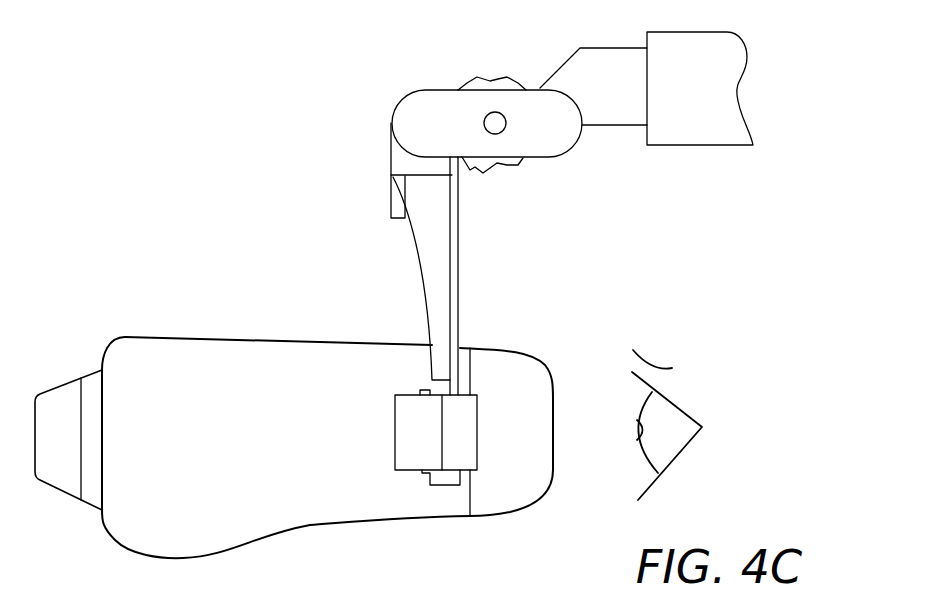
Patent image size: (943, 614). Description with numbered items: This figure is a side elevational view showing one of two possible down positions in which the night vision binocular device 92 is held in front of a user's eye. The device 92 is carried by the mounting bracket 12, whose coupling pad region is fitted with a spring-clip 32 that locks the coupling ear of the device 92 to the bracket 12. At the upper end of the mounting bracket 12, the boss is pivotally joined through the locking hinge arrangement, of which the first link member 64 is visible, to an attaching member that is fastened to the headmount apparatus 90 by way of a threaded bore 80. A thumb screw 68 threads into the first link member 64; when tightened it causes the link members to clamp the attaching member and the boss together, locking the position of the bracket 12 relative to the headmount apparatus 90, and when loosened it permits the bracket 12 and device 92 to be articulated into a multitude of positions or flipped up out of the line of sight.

The mounting bracket 12 is at (460, 283).
The spring-clip 32 is at (472, 468).
The first link member 64 is at (542, 140).
The thumb screw 68 is at (492, 79).
The threaded bore 80 is at (610, 48).
The headmount apparatus 90 is at (683, 32).
The night vision binocular device 92 is at (158, 557).